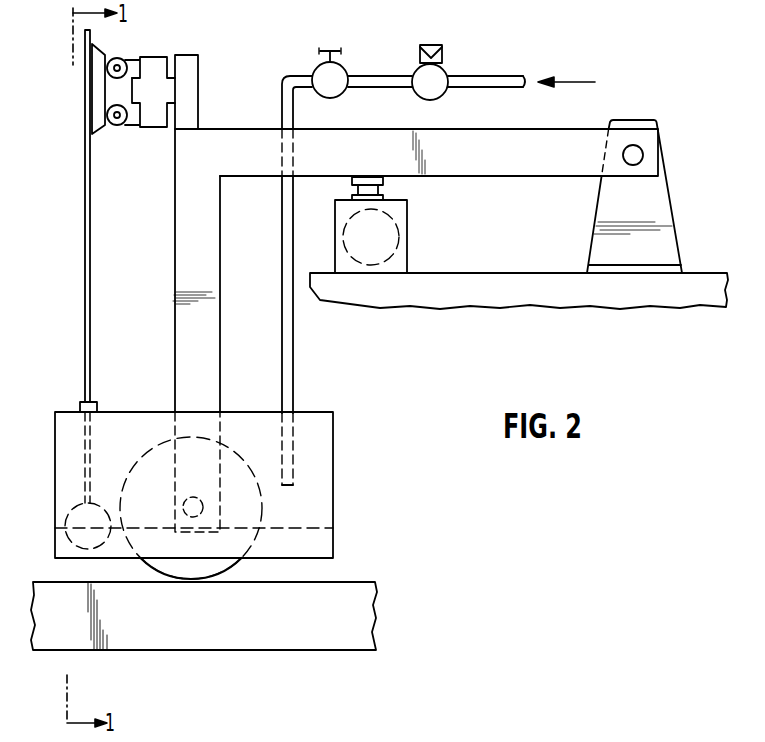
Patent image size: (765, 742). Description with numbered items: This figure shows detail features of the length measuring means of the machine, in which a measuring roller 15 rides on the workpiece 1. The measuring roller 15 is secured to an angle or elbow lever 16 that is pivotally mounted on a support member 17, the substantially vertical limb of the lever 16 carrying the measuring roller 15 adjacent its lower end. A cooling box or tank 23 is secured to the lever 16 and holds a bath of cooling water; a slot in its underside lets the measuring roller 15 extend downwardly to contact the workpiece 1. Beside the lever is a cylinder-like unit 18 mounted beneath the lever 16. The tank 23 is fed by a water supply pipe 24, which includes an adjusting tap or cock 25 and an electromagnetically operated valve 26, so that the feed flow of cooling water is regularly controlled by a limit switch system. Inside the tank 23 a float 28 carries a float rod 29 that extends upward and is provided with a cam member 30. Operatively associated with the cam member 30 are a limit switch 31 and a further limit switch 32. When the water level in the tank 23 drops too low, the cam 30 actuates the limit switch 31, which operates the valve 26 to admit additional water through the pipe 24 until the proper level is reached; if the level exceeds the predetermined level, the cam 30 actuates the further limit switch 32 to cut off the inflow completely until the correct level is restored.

The workpiece 1 is at (366, 638).
The measuring roller 15 is at (198, 568).
The angle lever 16 is at (507, 177).
The support member 17 is at (652, 205).
The cylinder 18 is at (388, 236).
The cooling tank 23 is at (320, 510).
The water supply pipe 24 is at (288, 387).
The adjusting tap 25 is at (340, 70).
The electromagnetically operated valve 26 is at (442, 68).
The float 28 is at (67, 517).
The float rod 29 is at (85, 279).
The cam member 30 is at (96, 90).
The limit switch 31 is at (153, 118).
The further limit switch 32 is at (153, 62).